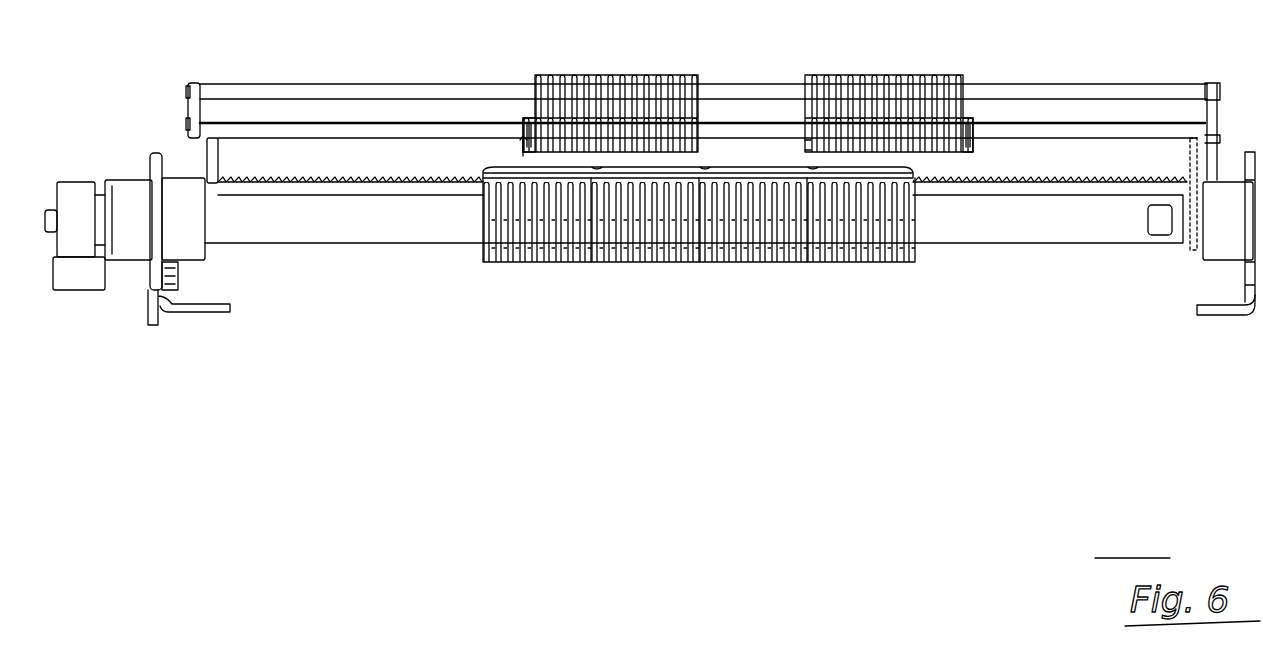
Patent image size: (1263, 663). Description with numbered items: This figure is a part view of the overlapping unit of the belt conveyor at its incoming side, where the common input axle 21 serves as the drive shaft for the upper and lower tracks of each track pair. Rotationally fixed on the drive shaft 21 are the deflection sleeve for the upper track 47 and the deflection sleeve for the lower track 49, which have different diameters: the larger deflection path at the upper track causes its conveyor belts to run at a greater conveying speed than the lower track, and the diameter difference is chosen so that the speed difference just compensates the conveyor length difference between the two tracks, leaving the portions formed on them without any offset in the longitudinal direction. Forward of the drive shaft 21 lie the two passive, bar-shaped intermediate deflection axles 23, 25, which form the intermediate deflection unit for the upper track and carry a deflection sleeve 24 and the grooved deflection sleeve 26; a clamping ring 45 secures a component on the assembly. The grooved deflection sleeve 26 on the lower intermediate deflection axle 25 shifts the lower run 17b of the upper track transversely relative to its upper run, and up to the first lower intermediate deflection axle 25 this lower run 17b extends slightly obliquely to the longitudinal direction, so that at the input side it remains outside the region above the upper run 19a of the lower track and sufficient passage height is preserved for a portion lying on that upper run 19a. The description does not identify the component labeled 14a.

The spindle 14a is at (690, 93).
The lower run of the upper track 17b is at (700, 128).
The upper run of the lower track 19a is at (500, 193).
The common input axle 21 is at (1050, 227).
The intermediate deflection axle 23 is at (1102, 95).
The deflection sleeve 24 is at (548, 72).
The lower intermediate deflection axle 25 is at (1150, 130).
The grooved deflection sleeve 26 is at (530, 124).
The clamping ring 45 is at (528, 143).
The deflection sleeve for upper track 47 is at (635, 297).
The deflection sleeve for lower track 49 is at (520, 297).